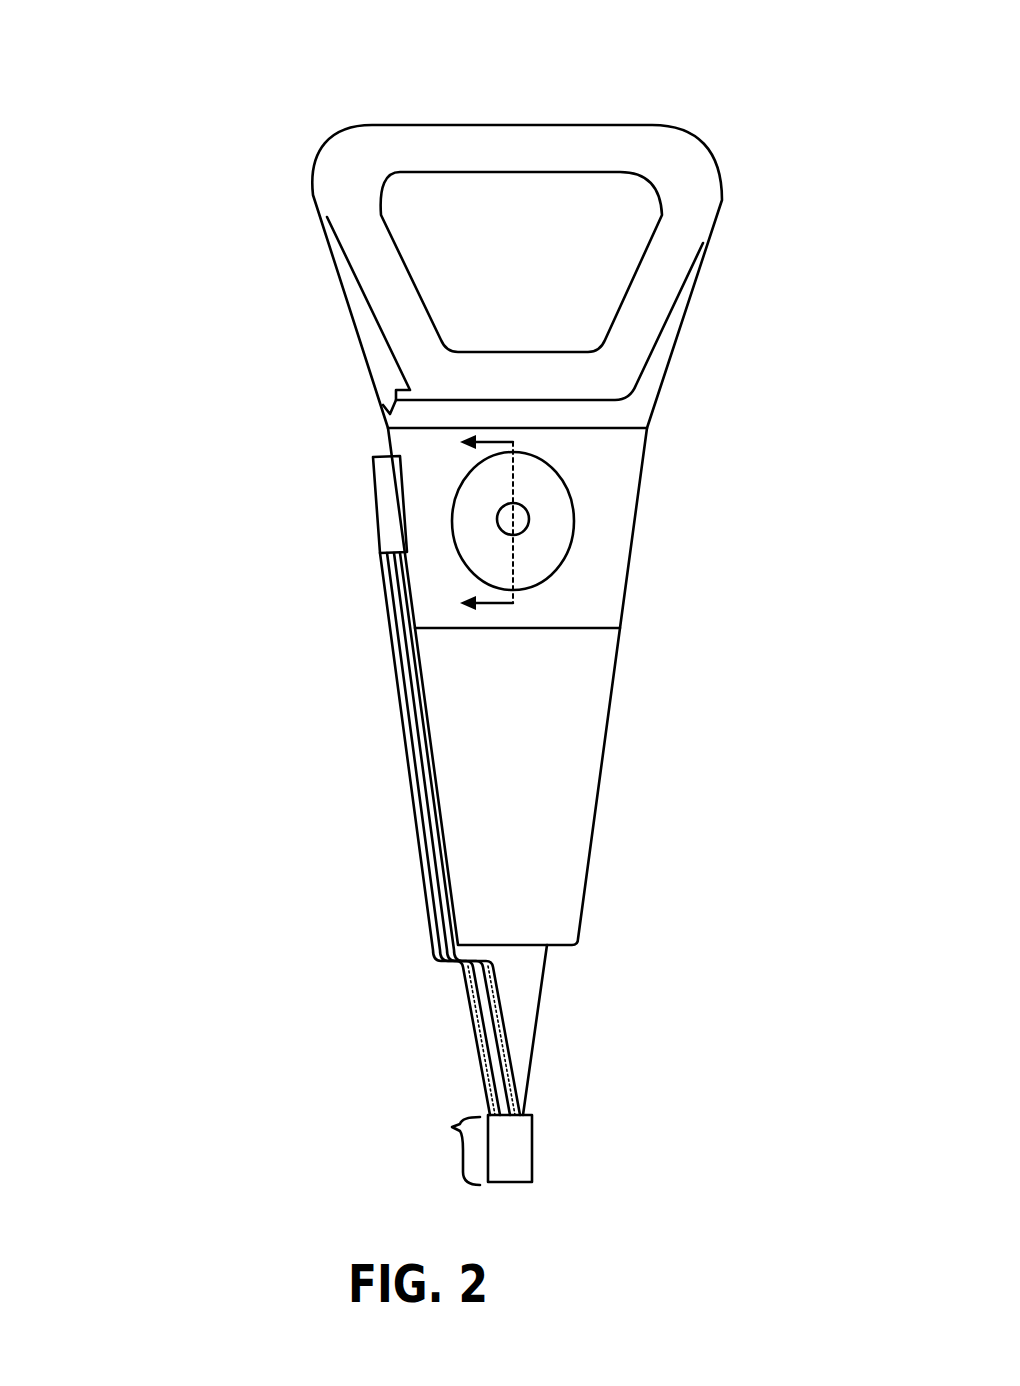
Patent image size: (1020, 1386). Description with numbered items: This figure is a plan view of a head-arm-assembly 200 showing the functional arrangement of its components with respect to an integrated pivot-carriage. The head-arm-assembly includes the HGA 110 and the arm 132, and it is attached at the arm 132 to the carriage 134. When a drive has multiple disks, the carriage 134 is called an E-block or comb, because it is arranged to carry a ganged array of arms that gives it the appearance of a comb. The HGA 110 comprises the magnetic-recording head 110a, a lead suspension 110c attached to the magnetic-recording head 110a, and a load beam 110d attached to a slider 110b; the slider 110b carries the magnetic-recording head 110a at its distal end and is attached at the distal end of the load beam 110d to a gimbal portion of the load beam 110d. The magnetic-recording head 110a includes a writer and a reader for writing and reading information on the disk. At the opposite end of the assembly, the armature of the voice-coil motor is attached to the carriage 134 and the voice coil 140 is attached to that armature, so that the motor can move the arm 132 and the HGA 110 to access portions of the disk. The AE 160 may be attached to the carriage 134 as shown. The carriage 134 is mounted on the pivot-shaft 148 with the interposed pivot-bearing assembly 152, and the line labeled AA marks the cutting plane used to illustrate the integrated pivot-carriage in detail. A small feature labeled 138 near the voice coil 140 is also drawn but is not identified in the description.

The surgical instrument / device 200 is at (112, 73).
The voice coil 140 is at (393, 297).
The tab 138 is at (382, 403).
The carriage 134 is at (585, 588).
The arm 132 is at (505, 727).
The pivot-bearing assembly 152 is at (550, 532).
The pivot-shaft 148 is at (513, 519).
The AE 160 is at (373, 512).
The HGA 110 is at (263, 888).
The load beam 110d is at (520, 977).
The lead suspension 110c is at (490, 1033).
The slider 110b is at (443, 1128).
The magnetic-recording head 110a is at (502, 1165).